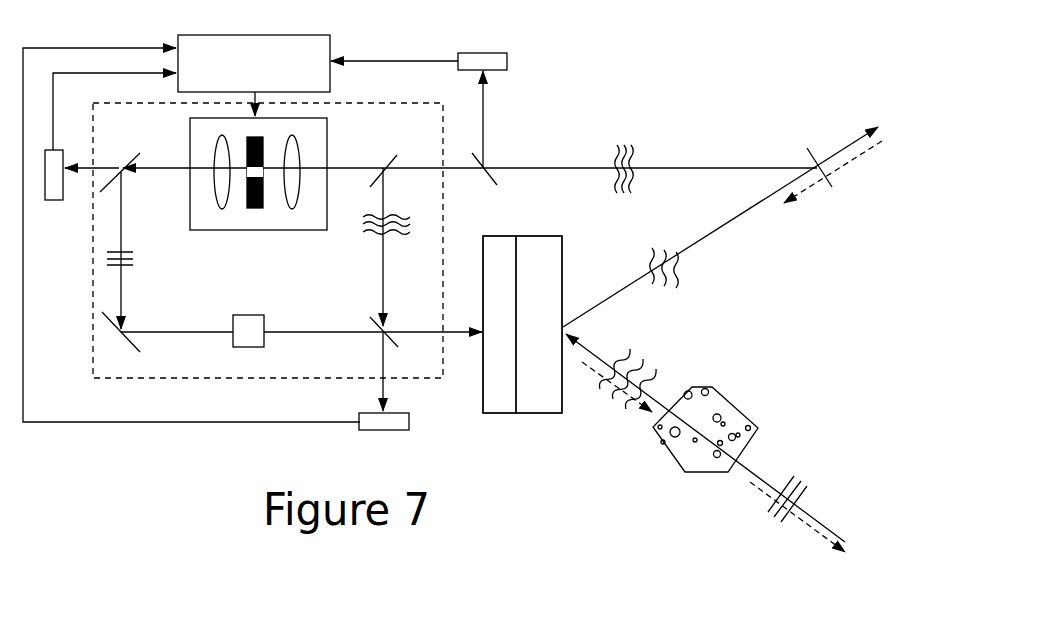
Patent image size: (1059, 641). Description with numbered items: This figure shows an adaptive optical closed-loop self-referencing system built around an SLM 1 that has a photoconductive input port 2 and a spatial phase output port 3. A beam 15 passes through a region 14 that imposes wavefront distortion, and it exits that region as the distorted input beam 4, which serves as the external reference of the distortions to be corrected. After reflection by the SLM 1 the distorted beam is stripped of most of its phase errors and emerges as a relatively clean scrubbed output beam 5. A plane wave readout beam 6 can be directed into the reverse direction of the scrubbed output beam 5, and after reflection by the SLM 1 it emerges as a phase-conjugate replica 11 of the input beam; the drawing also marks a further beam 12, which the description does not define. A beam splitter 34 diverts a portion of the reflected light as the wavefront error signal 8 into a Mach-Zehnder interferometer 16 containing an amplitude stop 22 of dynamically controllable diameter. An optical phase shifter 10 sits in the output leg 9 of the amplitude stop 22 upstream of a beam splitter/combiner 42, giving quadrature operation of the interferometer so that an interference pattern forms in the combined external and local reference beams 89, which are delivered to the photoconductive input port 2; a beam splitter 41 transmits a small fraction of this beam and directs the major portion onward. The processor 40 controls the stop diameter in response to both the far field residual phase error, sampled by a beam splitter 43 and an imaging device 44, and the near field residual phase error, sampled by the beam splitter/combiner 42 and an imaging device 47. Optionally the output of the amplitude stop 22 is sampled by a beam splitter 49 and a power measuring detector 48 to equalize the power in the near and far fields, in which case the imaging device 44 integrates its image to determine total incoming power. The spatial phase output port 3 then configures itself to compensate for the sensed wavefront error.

The SLM 1 is at (515, 428).
The photoconductive input port 2 is at (508, 247).
The spatial phase output port 3 is at (545, 257).
The distorted input beam 4 is at (600, 355).
The scrubbed output beam 5 is at (672, 250).
The readout beam 6 is at (840, 170).
The wavefront error signal 8 is at (612, 147).
The output leg 9 is at (303, 330).
The optical phase shifter 10 is at (244, 322).
The phase-conjugate replica 11 is at (592, 362).
The output beam 12 is at (818, 538).
The region 14 is at (728, 407).
The beam 15 is at (823, 520).
The Mach-Zehnder interferometer 16 is at (350, 103).
The amplitude stop 22 is at (270, 215).
The beam splitter 34 is at (812, 150).
The processor 40 is at (254, 75).
The beam splitter 41 is at (386, 156).
The beam splitter/combiner 42 is at (381, 322).
The beam splitter 43 is at (490, 180).
The imaging device 44 is at (487, 62).
The imaging device 47 is at (365, 413).
The power measuring detector 48 is at (62, 157).
The beam splitter 49 is at (129, 156).
The combined external and local reference beams 89 is at (385, 357).